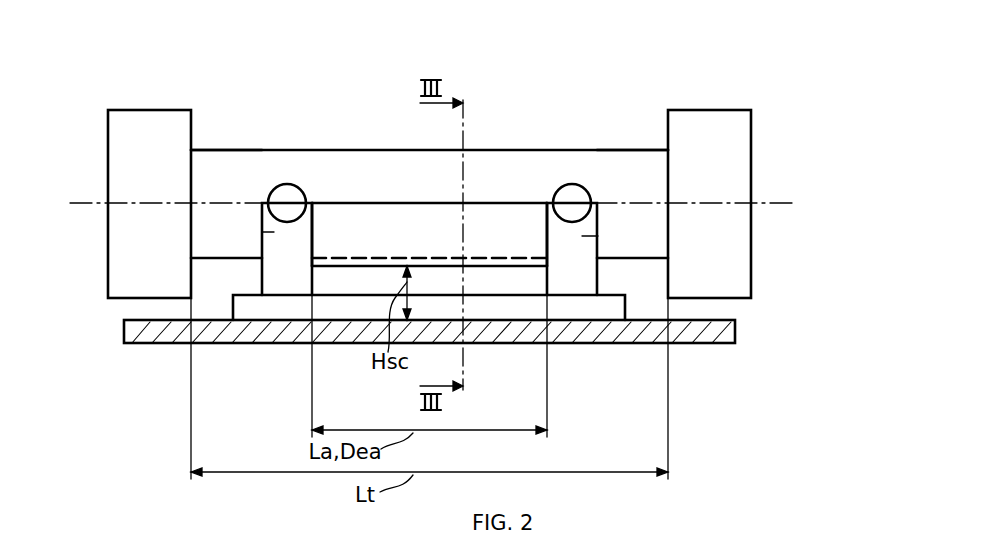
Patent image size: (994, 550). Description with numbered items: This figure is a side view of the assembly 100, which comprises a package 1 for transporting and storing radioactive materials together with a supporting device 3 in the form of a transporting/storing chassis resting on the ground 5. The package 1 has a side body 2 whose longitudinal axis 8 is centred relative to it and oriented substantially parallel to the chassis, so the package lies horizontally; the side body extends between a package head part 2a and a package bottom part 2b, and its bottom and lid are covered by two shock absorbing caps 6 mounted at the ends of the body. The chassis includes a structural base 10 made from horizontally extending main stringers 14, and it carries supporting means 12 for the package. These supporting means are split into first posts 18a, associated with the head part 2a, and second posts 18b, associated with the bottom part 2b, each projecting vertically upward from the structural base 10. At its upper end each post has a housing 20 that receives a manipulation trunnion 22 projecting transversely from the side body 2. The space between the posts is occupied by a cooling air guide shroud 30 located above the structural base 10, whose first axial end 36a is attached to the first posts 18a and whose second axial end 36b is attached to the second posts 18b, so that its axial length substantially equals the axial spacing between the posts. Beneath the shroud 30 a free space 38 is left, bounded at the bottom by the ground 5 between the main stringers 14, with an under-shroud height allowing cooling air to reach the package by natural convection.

The assembly 100 is at (603, 68).
The package 1 is at (206, 142).
The side body 2 is at (355, 151).
The package head part 2a is at (247, 175).
The package bottom part 2b is at (643, 163).
The supporting device 3 is at (592, 308).
The ground 5 is at (166, 312).
The shock absorbing caps 6 is at (117, 131).
The longitudinal axis 8 is at (772, 203).
The structural base 10 is at (253, 328).
The supporting means 12 is at (608, 278).
The main stringers 14 is at (565, 310).
The first posts 18a is at (272, 232).
The second posts 18b is at (583, 236).
The housing 20 is at (292, 218).
The manipulation trunnion 22 is at (285, 195).
The cooling air guide shroud 30 is at (477, 216).
The first axial end of the shroud 36a is at (325, 240).
The second axial end of the shroud 36b is at (530, 250).
The free space 38 is at (428, 293).